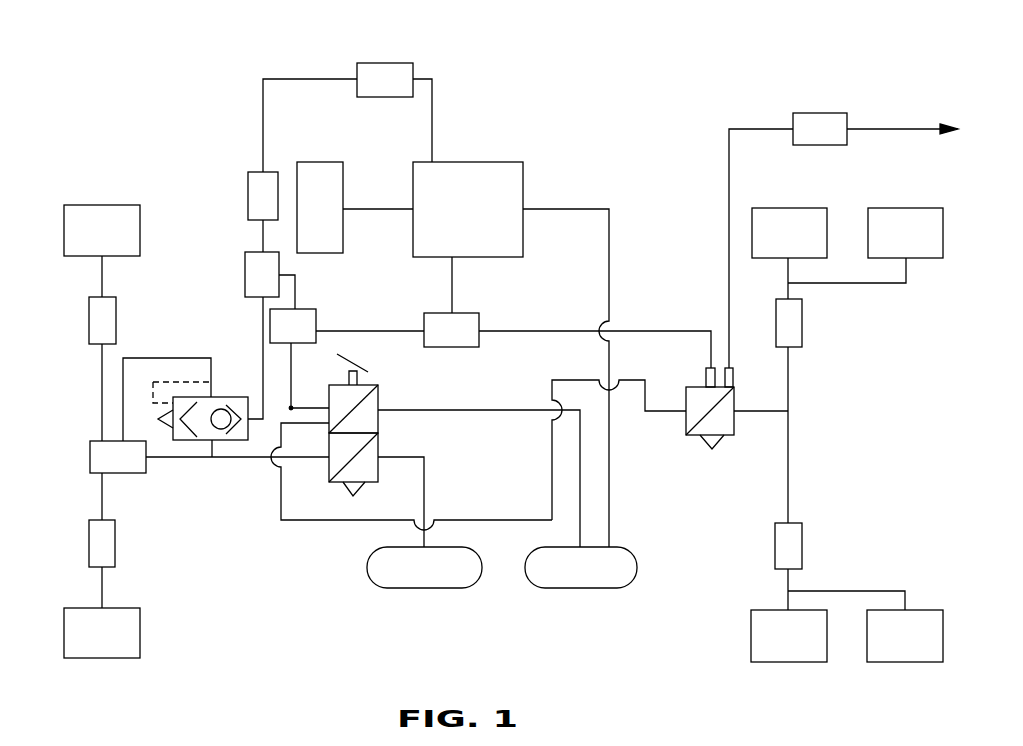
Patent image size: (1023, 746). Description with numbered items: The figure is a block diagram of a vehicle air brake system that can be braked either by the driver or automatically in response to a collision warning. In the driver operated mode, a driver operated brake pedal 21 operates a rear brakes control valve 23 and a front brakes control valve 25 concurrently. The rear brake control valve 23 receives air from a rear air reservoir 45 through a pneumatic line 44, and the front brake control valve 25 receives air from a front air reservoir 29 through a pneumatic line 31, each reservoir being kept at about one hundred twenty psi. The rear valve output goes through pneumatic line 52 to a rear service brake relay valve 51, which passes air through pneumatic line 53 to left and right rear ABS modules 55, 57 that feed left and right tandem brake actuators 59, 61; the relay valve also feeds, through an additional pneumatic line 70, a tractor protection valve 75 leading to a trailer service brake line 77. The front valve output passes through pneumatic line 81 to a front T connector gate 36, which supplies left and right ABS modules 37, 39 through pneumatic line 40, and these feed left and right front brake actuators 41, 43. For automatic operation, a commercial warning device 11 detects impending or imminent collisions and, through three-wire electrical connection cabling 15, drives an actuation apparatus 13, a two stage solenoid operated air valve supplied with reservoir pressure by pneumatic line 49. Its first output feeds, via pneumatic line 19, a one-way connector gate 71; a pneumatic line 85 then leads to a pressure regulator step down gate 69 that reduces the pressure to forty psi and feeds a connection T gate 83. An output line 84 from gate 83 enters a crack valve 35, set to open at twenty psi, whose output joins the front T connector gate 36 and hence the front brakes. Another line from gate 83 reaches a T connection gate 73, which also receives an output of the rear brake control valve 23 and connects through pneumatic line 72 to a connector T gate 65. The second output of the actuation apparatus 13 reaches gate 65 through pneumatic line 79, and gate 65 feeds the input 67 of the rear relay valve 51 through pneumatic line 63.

The commercial warning device 11 is at (310, 162).
The actuation apparatus 13 is at (475, 162).
The electrical connection cabling 15 is at (371, 209).
The pneumatic line 19 is at (432, 130).
The driver operated brake pedal 21 is at (357, 365).
The rear brakes control valve 23 is at (378, 390).
The front brakes control valve 25 is at (378, 440).
The front air reservoir 29 is at (405, 588).
The pneumatic line 31 is at (424, 490).
The crack valve 35 is at (212, 441).
The front T connector gate 36 is at (124, 473).
The left front ABS module 37 is at (89, 537).
The right front ABS module 39 is at (89, 317).
The pneumatic line 40 is at (102, 405).
The left front brake actuator 41 is at (140, 630).
The right front brake actuator 43 is at (140, 230).
The pneumatic line 44 is at (497, 410).
The rear air reservoir 45 is at (575, 588).
The pneumatic line 49 is at (609, 229).
The rear service brake relay valve 51 is at (690, 435).
The pneumatic line 52 is at (552, 492).
The pneumatic line 53 is at (757, 411).
The left rear ABS module 55 is at (802, 545).
The right rear ABS module 57 is at (802, 332).
The left tandem brake actuator 59 is at (751, 645).
The right tandem brake actuator 61 is at (803, 208).
The pneumatic line 63 is at (658, 331).
The connector T gate 65 is at (434, 313).
The input of rear relay valve 67 is at (706, 378).
The pressure regulator step down gate 69 is at (248, 193).
The pneumatic line 70 is at (729, 182).
The one-way connector gate 71 is at (380, 63).
The pneumatic line 72 is at (368, 331).
The T connection gate 73 is at (303, 309).
The tractor protection valve 75 is at (820, 113).
The trailer service brake line 77 is at (922, 132).
The pneumatic line 79 is at (452, 289).
The pneumatic line 81 is at (308, 458).
The connection T gate 83 is at (245, 276).
The output line 84 is at (263, 335).
The pneumatic line 85 is at (263, 150).